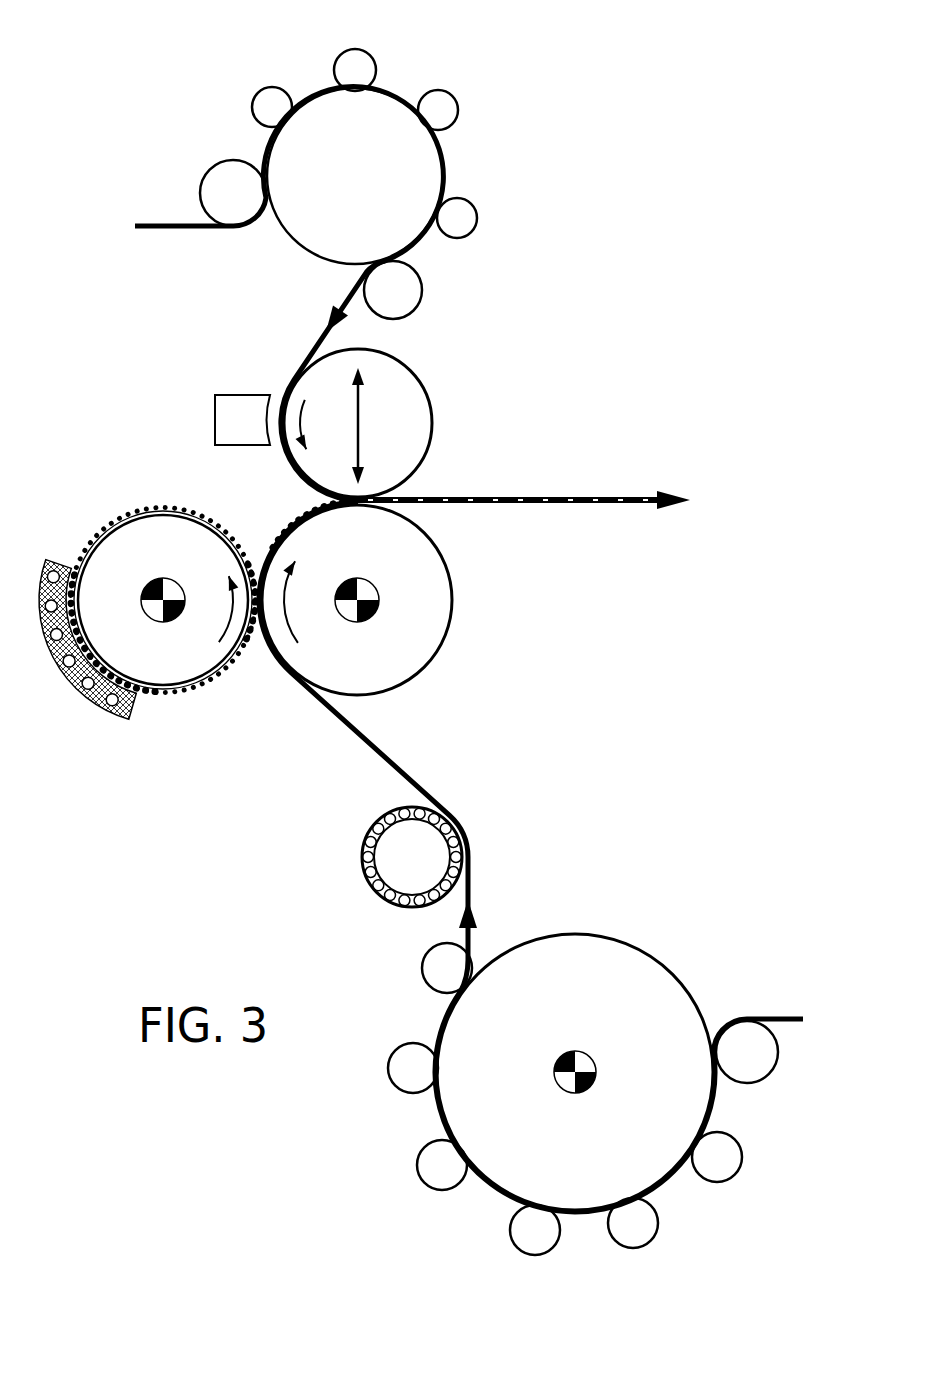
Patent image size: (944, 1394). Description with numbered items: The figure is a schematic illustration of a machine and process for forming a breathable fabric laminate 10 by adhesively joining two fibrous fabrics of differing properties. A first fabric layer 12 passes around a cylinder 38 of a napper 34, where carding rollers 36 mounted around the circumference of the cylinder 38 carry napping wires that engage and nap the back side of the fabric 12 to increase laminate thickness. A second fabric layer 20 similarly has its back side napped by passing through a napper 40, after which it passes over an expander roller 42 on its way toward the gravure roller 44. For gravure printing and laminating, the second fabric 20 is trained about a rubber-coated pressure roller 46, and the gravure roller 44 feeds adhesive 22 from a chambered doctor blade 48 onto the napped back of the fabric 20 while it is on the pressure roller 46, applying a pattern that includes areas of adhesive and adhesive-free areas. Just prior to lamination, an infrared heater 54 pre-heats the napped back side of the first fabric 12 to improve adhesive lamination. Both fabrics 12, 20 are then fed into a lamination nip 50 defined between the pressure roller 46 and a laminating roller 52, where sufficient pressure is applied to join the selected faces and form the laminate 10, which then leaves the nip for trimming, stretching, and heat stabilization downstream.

The fabric laminate 10 is at (577, 497).
The first fabric layer 12 is at (320, 350).
The second fabric layer 20 is at (383, 753).
The adhesive 22 is at (285, 530).
The napper 34 is at (376, 170).
The carding rollers 36 is at (445, 93).
The cylinder 38 is at (342, 182).
The napper 40 is at (665, 929).
The expander roller 42 is at (362, 863).
The gravure roller 44 is at (182, 695).
The pressure roller 46 is at (457, 597).
The chambered doctor blade 48 is at (97, 710).
The lamination nip 50 is at (284, 487).
The laminating roller 52 is at (420, 381).
The infrared heater 54 is at (215, 403).